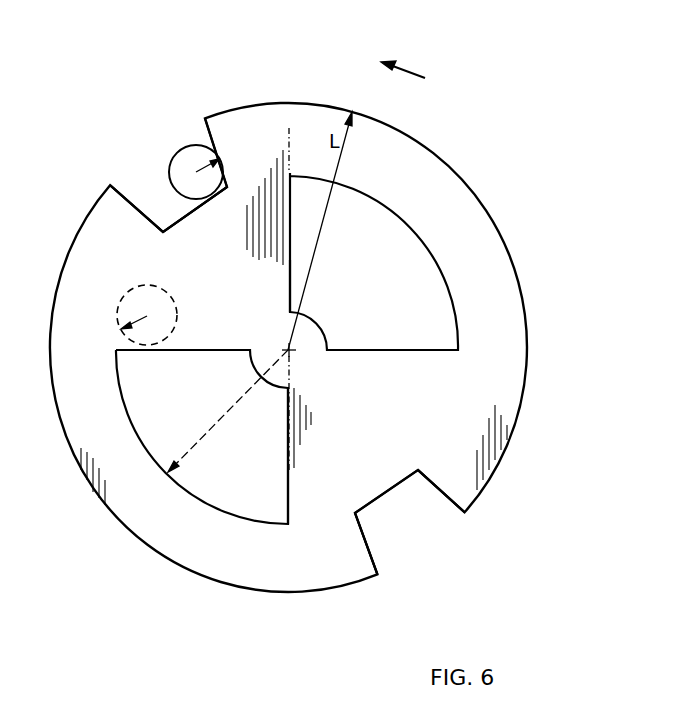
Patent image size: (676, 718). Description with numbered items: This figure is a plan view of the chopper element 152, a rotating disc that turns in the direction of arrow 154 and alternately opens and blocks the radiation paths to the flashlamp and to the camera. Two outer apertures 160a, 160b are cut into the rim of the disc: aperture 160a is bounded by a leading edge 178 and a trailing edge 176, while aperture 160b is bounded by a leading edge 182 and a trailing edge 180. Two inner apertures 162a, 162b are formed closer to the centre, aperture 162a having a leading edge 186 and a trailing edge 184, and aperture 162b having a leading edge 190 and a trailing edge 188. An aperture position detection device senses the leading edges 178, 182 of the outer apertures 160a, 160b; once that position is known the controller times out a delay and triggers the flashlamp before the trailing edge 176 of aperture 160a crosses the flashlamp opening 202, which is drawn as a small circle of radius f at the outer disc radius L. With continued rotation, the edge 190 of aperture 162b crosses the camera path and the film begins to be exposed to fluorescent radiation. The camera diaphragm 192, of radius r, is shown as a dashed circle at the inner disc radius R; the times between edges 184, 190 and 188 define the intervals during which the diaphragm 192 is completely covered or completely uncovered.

The chopper element 152 is at (486, 167).
The arrow 154 is at (410, 72).
The aperture 160a is at (144, 165).
The aperture 160b is at (418, 540).
The aperture 162a is at (197, 470).
The aperture 162b is at (388, 245).
The trailing edge 176 is at (212, 135).
The leading edge 178 is at (163, 230).
The trailing edge 180 is at (367, 535).
The leading edge 182 is at (447, 502).
The trailing edge 184 is at (148, 372).
The leading edge 186 is at (288, 464).
The trailing edge 188 is at (375, 350).
The leading edge 190 is at (293, 277).
The diaphragm 192 is at (120, 296).
The flashlamp opening 202 is at (172, 193).